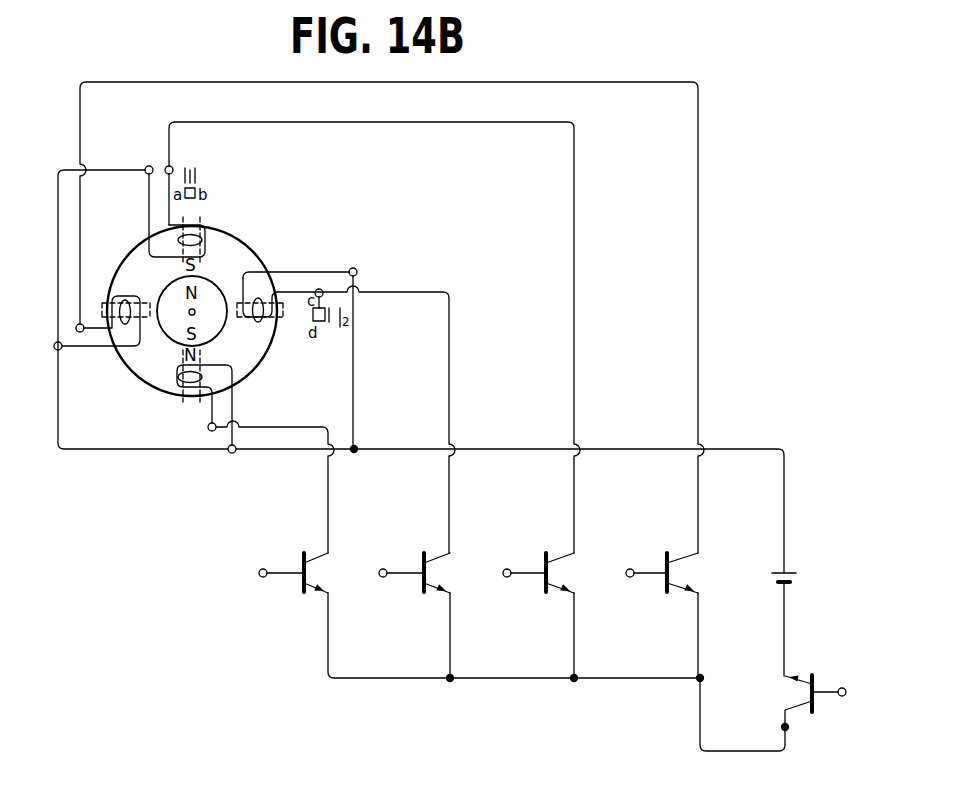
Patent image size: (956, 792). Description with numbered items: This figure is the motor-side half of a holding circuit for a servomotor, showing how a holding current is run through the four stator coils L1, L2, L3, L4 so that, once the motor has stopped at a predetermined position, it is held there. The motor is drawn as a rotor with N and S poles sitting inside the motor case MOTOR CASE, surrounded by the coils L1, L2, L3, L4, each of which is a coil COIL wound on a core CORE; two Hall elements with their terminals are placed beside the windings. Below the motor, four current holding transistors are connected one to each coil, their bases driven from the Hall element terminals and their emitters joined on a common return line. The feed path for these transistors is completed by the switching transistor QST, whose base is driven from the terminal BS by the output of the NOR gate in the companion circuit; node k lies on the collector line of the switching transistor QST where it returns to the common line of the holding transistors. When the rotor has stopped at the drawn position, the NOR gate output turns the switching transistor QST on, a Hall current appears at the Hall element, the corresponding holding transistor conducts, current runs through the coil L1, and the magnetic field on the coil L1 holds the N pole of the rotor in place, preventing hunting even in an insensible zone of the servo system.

The coil L1 is at (188, 215).
The coil L2 is at (191, 397).
The coil L3 is at (260, 314).
The coil L4 is at (106, 308).
The coil core CORE is at (195, 228).
The motor case MOTOR CASE is at (253, 243).
The coil COIL is at (300, 272).
The switching transistor QST is at (805, 692).
The start signal terminal BS is at (836, 680).
The node k is at (788, 728).